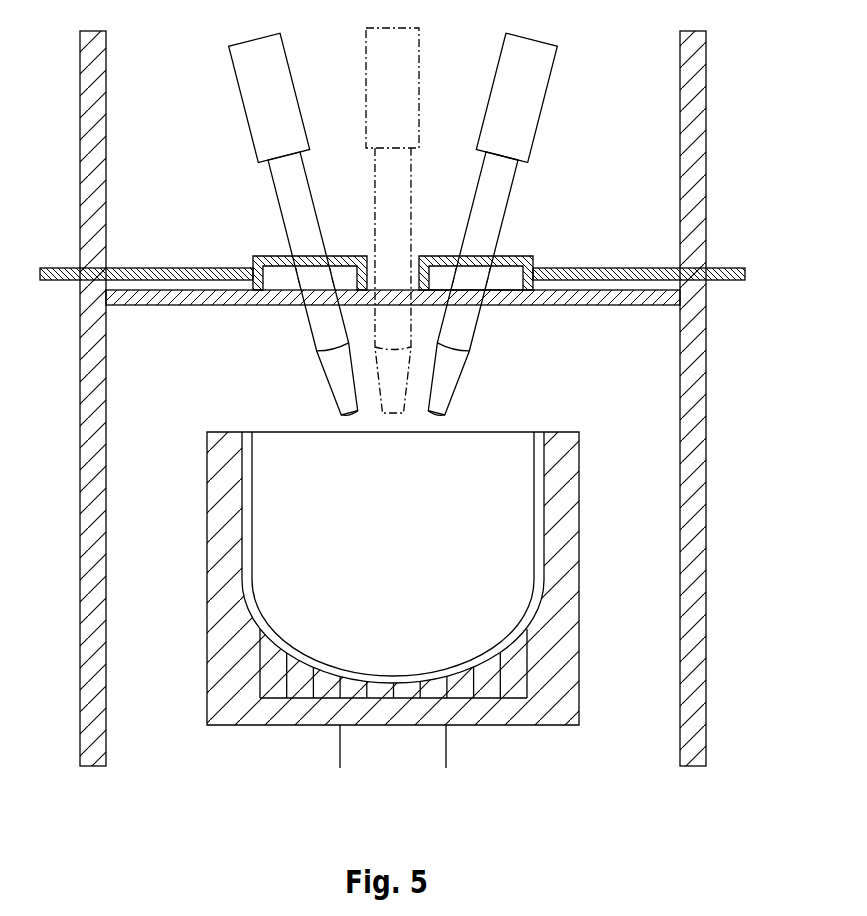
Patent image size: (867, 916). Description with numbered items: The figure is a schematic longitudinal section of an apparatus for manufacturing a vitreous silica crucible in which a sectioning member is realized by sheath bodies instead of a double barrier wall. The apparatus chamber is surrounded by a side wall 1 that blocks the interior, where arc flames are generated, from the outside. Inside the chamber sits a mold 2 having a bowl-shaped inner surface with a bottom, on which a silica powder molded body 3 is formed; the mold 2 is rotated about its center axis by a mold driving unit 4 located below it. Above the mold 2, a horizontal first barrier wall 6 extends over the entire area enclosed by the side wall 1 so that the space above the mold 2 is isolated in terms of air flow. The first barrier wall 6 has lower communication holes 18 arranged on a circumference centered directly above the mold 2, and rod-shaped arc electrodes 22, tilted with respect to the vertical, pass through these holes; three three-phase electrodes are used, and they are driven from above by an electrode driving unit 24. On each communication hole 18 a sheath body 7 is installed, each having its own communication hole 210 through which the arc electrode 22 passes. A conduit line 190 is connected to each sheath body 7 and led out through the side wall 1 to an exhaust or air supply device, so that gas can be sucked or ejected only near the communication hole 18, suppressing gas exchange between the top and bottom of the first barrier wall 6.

The side wall 1 is at (707, 533).
The mold 2 is at (579, 648).
The silica powder molded body 3 is at (527, 512).
The mold driving unit 4 is at (446, 748).
The first barrier wall 6 is at (612, 306).
The sheath body 7 is at (263, 257).
The lower communication hole 18 is at (480, 306).
The arc electrode 22 is at (311, 183).
The electrode driving unit 24 is at (285, 52).
The conduit line 190 is at (160, 268).
The communication hole 210 is at (290, 282).